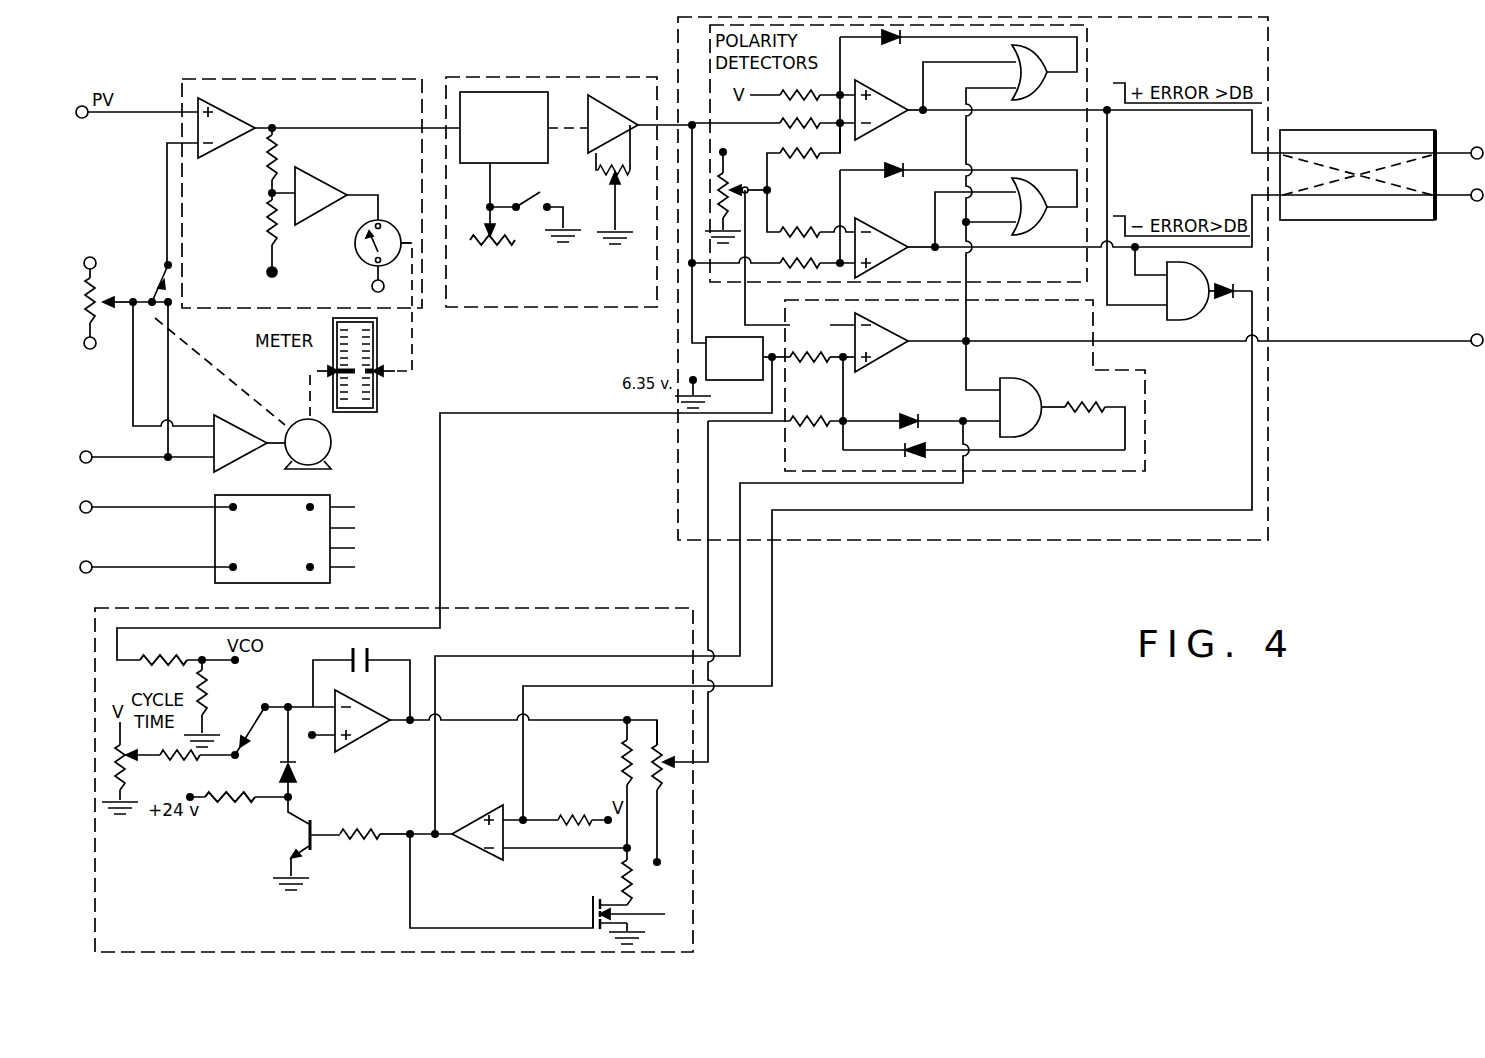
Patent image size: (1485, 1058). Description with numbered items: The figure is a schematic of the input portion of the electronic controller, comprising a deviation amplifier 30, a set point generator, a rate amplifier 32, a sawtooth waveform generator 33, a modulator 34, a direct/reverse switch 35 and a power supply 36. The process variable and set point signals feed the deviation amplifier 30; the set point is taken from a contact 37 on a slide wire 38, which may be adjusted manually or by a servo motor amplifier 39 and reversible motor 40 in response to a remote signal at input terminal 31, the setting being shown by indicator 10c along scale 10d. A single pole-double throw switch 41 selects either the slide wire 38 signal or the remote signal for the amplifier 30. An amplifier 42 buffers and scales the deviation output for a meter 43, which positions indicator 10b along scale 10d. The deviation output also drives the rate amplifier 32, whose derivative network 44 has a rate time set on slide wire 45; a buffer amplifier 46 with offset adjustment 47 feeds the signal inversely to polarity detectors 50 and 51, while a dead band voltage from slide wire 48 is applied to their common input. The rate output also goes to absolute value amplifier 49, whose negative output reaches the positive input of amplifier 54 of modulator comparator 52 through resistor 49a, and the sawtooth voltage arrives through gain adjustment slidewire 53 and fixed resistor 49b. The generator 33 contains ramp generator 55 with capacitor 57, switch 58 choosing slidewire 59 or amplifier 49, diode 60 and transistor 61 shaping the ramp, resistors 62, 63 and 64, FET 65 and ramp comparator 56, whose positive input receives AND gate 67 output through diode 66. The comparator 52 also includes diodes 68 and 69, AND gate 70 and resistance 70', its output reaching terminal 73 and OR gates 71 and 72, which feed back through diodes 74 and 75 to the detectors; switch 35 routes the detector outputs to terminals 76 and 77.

The indicator 10b is at (412, 338).
The indicator 10c is at (337, 366).
The scale 10d is at (362, 392).
The deviation amplifier 30 is at (212, 80).
The input terminal 31 is at (90, 452).
The rate amplifier 32 is at (495, 78).
The sawtooth waveform generator 33 is at (678, 614).
The modulator 34 is at (1268, 66).
The direct/reverse switch 35 is at (1349, 130).
The power supply 36 is at (215, 578).
The contact 37 is at (114, 301).
The slide wire 38 is at (86, 273).
The servo motor amplifier 39 is at (228, 466).
The reversible motor 40 is at (332, 446).
The single pole-double throw switch 41 is at (165, 292).
The amplifier 42 is at (324, 191).
The meter 43 is at (360, 232).
The derivative network 44 is at (479, 166).
The rate time adjustment slide wire 45 is at (510, 244).
The buffer amplifier 46 is at (586, 150).
The offset adjustment 47 is at (610, 178).
The potentiometer slide wire 48 is at (729, 171).
The absolute value amplifier 49 is at (735, 338).
The resistor 49a is at (820, 364).
The fixed resistor 49b is at (822, 428).
The polarity detector 50 is at (888, 96).
The polarity detector 51 is at (878, 232).
The modulator comparator 52 is at (1147, 403).
The gain adjustment slidewire 53 is at (662, 773).
The amplifier 54 is at (893, 334).
The ramp generator 55 is at (366, 700).
The ramp comparator 56 is at (480, 810).
The capacitor 57 is at (367, 659).
The single pole-double throw switch 58 is at (262, 709).
The slidewire 59 is at (128, 772).
The diode 60 is at (291, 776).
The transistor 61 is at (305, 836).
The resistor 62 is at (375, 827).
The resistor 63 is at (620, 881).
The resistor 64 is at (622, 766).
The field effect transistor 65 is at (592, 910).
The diode 66 is at (1226, 284).
The AND gate 67 is at (1197, 314).
The diode 68 is at (910, 415).
The diode 69 is at (903, 449).
The AND gate 70 is at (1032, 417).
The resistance 70' is at (1095, 426).
The OR gate 71 is at (1043, 86).
The OR gate 72 is at (1043, 219).
The output terminal 73 is at (1473, 336).
The diode 74 is at (886, 44).
The diode 75 is at (896, 165).
The terminal 76 is at (1474, 148).
The terminal 77 is at (1474, 201).